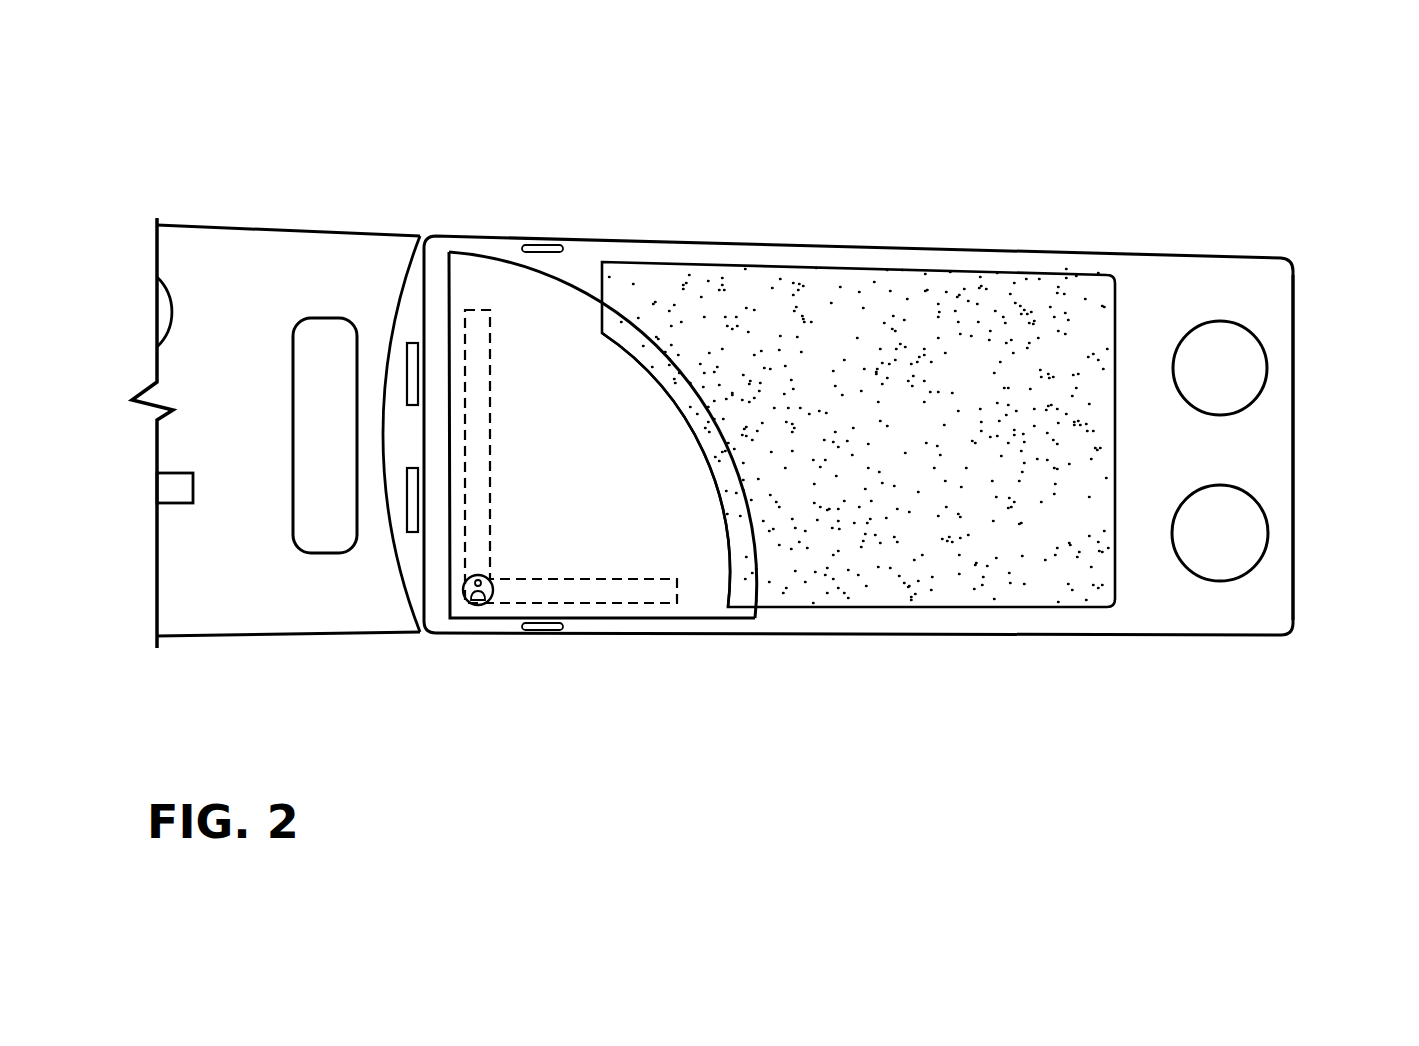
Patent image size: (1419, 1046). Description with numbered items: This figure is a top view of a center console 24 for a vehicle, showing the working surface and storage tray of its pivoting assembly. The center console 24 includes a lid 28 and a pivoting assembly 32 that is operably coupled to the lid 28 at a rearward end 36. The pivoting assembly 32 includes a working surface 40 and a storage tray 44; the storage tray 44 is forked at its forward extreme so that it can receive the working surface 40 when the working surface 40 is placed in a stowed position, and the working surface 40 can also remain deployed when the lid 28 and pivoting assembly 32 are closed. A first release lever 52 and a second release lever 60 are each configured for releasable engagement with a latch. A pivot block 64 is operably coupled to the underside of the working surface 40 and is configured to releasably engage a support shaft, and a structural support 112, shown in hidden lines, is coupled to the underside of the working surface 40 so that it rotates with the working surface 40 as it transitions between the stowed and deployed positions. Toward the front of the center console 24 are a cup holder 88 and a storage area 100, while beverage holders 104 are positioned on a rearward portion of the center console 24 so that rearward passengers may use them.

The center console 24 is at (295, 172).
The cup holder 88 is at (168, 300).
The storage area 100 is at (322, 332).
The first release lever 52 is at (408, 343).
The second release lever 60 is at (413, 533).
The lid 28 is at (884, 262).
The rearward end 36 is at (1155, 256).
The working surface 40 is at (556, 324).
The pivoting assembly 32 is at (741, 585).
The storage tray 44 is at (778, 288).
The structural support 112 is at (490, 336).
The pivot block 64 is at (462, 608).
The beverage holders 104 is at (1220, 505).